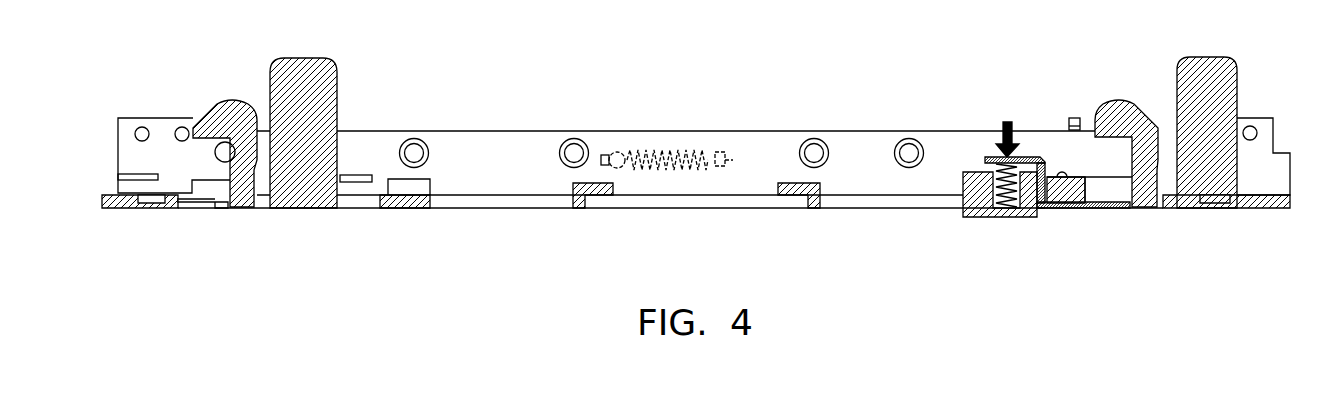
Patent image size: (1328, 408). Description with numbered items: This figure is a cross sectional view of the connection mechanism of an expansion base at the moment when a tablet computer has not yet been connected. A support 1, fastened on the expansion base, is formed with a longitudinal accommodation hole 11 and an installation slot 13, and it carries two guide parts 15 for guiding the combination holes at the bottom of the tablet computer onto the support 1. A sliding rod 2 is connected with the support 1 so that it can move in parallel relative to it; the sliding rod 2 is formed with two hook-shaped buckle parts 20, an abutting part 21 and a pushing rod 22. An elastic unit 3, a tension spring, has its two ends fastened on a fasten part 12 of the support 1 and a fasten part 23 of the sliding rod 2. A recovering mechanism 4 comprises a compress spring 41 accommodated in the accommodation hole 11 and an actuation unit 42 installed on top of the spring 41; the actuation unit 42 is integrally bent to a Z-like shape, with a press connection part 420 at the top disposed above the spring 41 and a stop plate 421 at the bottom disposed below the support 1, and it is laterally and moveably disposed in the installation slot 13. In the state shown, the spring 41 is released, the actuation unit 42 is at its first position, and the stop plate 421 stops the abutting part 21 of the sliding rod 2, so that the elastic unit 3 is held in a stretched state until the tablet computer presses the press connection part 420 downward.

The support 1 is at (510, 150).
The sliding rod 2 is at (1147, 208).
The elastic unit 3 is at (667, 150).
The recovering mechanism 4 is at (1040, 254).
The accommodation hole 11 is at (972, 218).
The fasten part 12 is at (612, 152).
The installation slot 13 is at (1043, 210).
The guide part 15 is at (300, 78).
The buckle part 20 is at (212, 112).
The abutting part 21 is at (1100, 208).
The pushing rod 22 is at (1072, 118).
The fasten part 23 is at (723, 152).
The spring 41 is at (1007, 200).
The actuation unit 42 is at (1030, 160).
The press connection part 420 is at (992, 160).
The stop plate 421 is at (1058, 210).